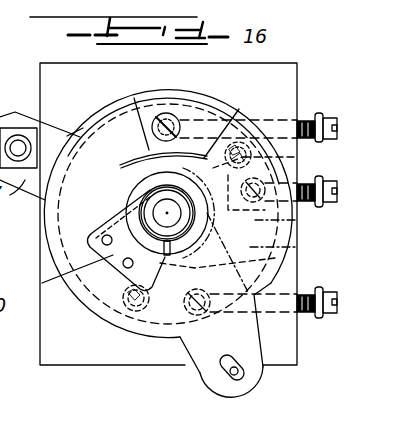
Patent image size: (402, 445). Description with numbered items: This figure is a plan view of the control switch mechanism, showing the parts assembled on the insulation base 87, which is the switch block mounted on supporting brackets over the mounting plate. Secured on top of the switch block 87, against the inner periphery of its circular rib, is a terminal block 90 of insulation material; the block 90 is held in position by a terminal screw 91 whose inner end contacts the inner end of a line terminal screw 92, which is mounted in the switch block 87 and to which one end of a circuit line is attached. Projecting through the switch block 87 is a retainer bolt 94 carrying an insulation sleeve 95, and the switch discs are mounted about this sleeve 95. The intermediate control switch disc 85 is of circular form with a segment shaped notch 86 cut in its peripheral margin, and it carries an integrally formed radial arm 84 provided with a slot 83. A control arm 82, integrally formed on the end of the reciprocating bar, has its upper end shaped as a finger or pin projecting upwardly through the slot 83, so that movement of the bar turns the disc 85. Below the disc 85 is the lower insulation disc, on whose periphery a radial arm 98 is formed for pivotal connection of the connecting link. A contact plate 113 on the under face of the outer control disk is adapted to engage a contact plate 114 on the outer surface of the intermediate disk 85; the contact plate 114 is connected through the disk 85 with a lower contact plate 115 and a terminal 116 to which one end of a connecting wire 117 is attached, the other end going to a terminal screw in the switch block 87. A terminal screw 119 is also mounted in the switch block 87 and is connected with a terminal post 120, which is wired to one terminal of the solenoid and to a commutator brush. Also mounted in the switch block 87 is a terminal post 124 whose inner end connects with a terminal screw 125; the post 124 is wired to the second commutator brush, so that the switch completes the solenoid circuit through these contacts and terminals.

The control arm 82 is at (228, 384).
The slot 83 is at (218, 372).
The radial arm 84 is at (264, 356).
The intermediate control switch disc 85 is at (90, 302).
The segment shaped notch 86 is at (107, 111).
The insulation base 87 is at (48, 366).
The terminal block 90 is at (202, 115).
The terminal screw 91 is at (172, 116).
The line terminal screw 92 is at (331, 116).
The retainer bolt 94 is at (158, 204).
The insulation sleeve 95 is at (152, 217).
The radial arm 98 is at (26, 182).
The contact plate 113 is at (125, 318).
The contact plate 114 is at (42, 283).
The lower contact plate 115 is at (292, 248).
The terminal 116 is at (298, 158).
The connecting wire 117 is at (217, 224).
The terminal screw 119 is at (192, 322).
The terminal post 120 is at (300, 314).
The terminal post 124 is at (313, 185).
The terminal screw 125 is at (300, 209).